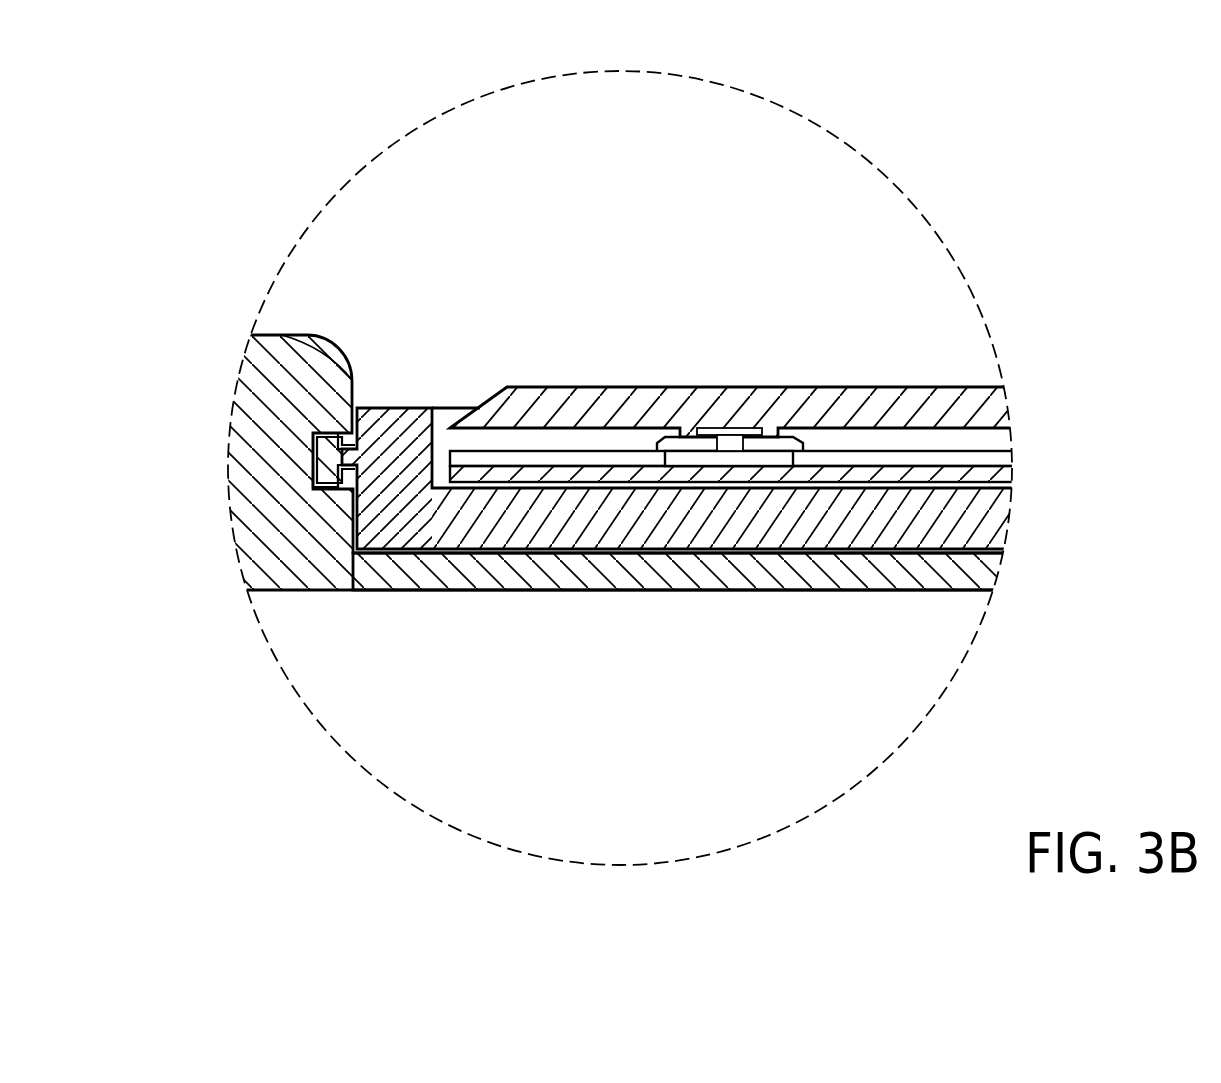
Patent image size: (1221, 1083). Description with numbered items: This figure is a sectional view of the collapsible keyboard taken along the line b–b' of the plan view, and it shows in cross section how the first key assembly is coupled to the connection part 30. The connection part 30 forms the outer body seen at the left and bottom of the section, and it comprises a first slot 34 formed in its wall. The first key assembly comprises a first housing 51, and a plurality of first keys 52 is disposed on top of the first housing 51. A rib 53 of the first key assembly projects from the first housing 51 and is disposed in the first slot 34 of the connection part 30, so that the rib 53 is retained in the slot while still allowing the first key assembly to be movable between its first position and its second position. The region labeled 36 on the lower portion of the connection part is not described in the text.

The connection part 30 is at (288, 368).
The first slot 34 is at (317, 479).
The bottom wall 36 is at (700, 580).
The first housing 51 is at (405, 427).
The first keys 52 is at (702, 400).
The rib 53 is at (317, 443).
The section line b–b' b is at (812, 120).